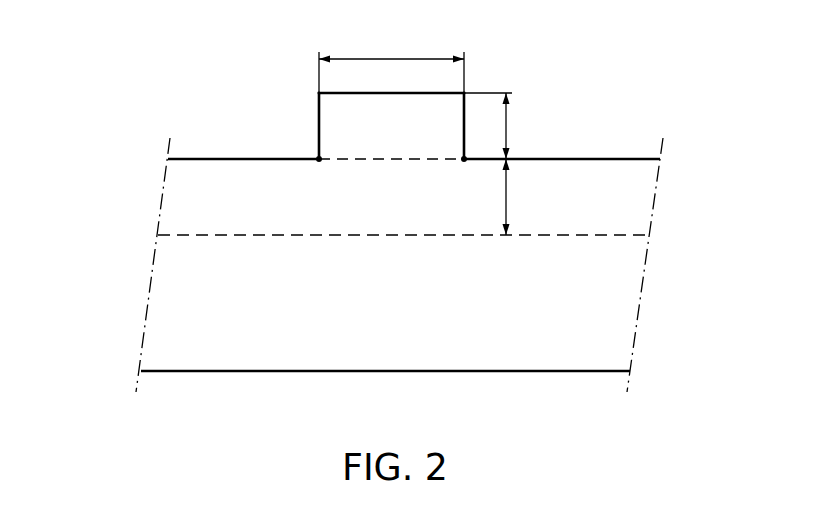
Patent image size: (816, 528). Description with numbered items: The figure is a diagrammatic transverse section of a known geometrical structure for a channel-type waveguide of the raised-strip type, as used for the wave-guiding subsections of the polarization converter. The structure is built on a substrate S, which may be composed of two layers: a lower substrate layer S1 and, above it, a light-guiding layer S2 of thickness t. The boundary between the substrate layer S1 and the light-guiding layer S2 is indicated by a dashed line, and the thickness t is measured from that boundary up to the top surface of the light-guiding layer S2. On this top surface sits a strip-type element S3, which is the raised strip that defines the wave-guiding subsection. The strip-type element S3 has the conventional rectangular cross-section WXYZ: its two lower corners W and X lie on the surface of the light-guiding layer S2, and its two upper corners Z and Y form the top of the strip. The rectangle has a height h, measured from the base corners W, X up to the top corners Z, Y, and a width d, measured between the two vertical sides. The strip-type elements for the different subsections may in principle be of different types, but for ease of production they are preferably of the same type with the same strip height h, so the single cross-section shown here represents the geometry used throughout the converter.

The substrate S is at (673, 163).
The substrate layer S1 is at (190, 283).
The light-guiding layer S2 is at (195, 186).
The strip-type element S3 is at (358, 132).
The corner point W is at (319, 159).
The corner point X is at (464, 159).
The corner point Y is at (467, 92).
The corner point Z is at (319, 93).
The width d is at (391, 62).
The height h is at (494, 126).
The thickness t is at (514, 197).